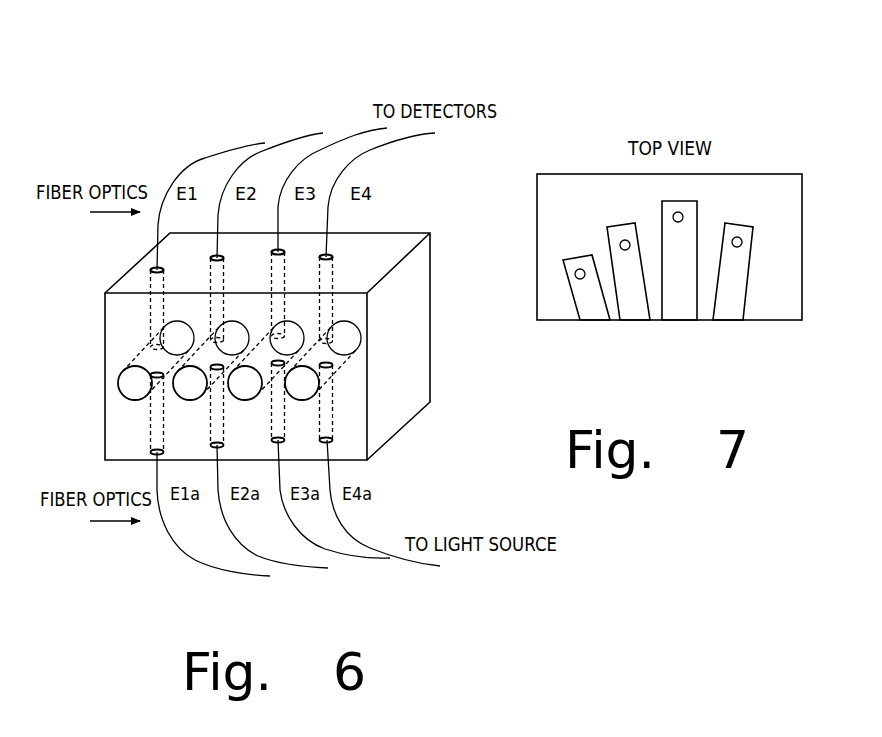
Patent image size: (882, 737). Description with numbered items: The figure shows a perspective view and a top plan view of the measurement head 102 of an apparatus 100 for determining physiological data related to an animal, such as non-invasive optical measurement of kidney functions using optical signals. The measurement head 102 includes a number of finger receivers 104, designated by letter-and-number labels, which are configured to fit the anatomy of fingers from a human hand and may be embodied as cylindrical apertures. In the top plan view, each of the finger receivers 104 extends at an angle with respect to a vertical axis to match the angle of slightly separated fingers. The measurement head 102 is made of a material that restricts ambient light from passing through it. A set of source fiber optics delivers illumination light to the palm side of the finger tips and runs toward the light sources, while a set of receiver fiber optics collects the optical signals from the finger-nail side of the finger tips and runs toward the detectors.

In FIG. 6, the apparatus 100 is at (150, 88).
In FIG. 7, the apparatus 100 is at (774, 112).
In FIG. 6, the measurement head 102 is at (105, 337).
In FIG. 6, the finger receivers 104 is at (190, 400).
In FIG. 7, the finger receivers 104 is at (721, 328).